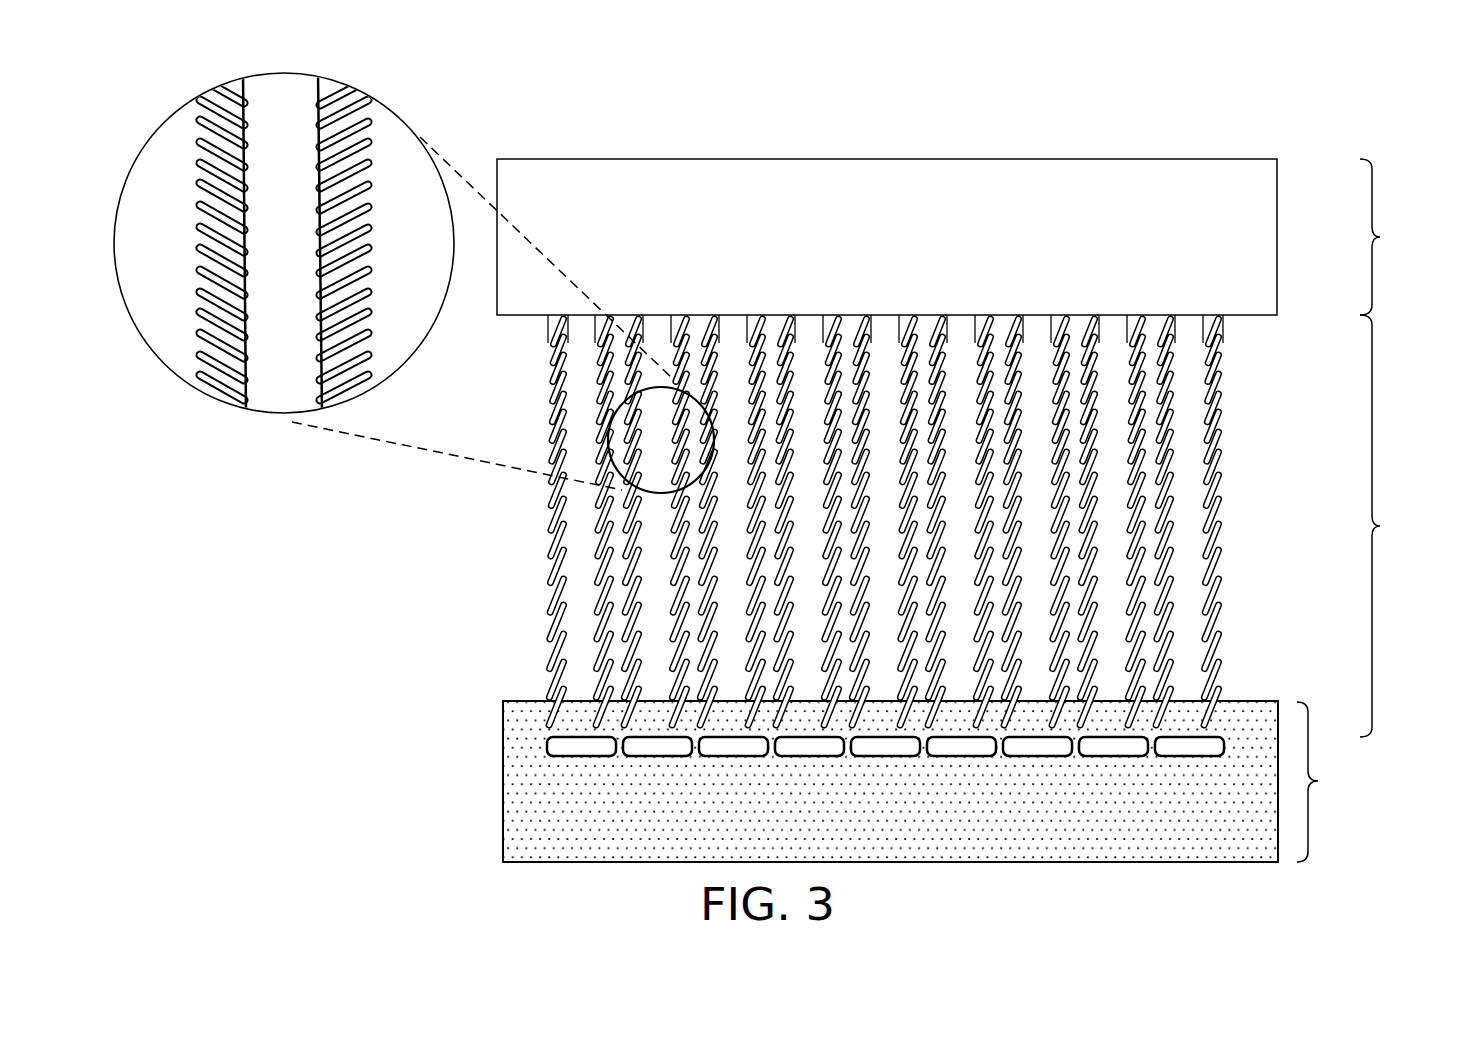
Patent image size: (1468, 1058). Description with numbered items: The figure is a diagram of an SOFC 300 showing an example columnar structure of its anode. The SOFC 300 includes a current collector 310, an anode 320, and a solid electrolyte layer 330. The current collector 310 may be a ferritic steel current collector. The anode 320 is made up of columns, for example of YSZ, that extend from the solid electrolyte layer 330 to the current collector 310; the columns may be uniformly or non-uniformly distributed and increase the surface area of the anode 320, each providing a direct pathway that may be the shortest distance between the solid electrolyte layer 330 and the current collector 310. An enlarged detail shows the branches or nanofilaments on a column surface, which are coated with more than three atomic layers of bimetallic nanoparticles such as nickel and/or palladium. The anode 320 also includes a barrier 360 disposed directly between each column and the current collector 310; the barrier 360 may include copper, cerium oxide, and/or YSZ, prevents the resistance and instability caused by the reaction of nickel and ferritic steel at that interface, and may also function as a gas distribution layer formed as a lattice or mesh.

The SOFC 300 is at (156, 74).
The current collector 310 is at (503, 781).
The anode 320 is at (1297, 315).
The solid electrolyte layer 330 is at (1262, 160).
The barrier 360 is at (553, 744).